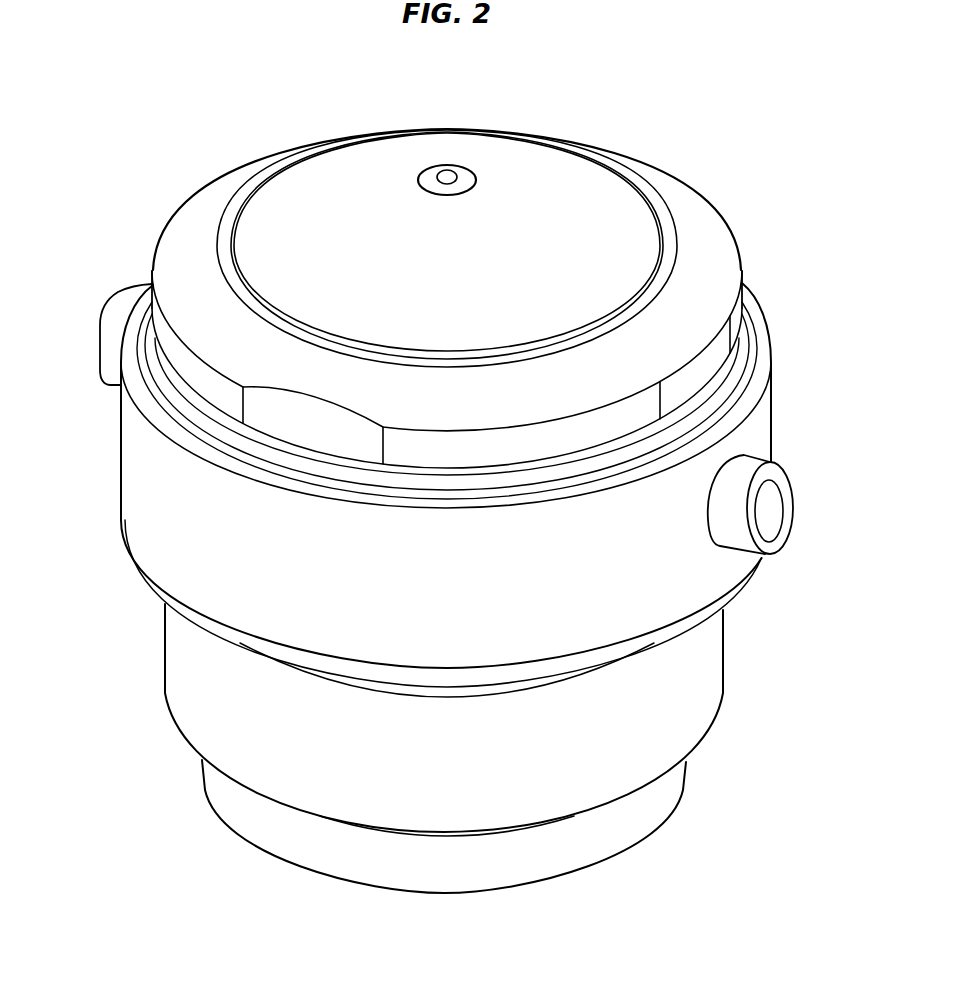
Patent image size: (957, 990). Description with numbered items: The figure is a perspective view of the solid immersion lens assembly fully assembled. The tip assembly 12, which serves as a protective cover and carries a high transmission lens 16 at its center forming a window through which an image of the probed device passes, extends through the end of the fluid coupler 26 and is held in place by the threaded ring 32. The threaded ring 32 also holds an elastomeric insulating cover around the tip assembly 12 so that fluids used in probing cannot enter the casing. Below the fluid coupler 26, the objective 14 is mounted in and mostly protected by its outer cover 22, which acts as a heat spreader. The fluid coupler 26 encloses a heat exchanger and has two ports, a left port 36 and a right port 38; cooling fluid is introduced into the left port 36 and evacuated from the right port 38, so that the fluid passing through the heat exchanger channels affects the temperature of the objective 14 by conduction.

The tip assembly 12 is at (586, 180).
The objective 14 is at (653, 812).
The high transmission lens 16 is at (461, 174).
The outer cover 22 is at (694, 672).
The fluid coupler 26 is at (150, 470).
The threaded ring 32 is at (710, 247).
The left port 36 is at (794, 494).
The right port 38 is at (107, 327).